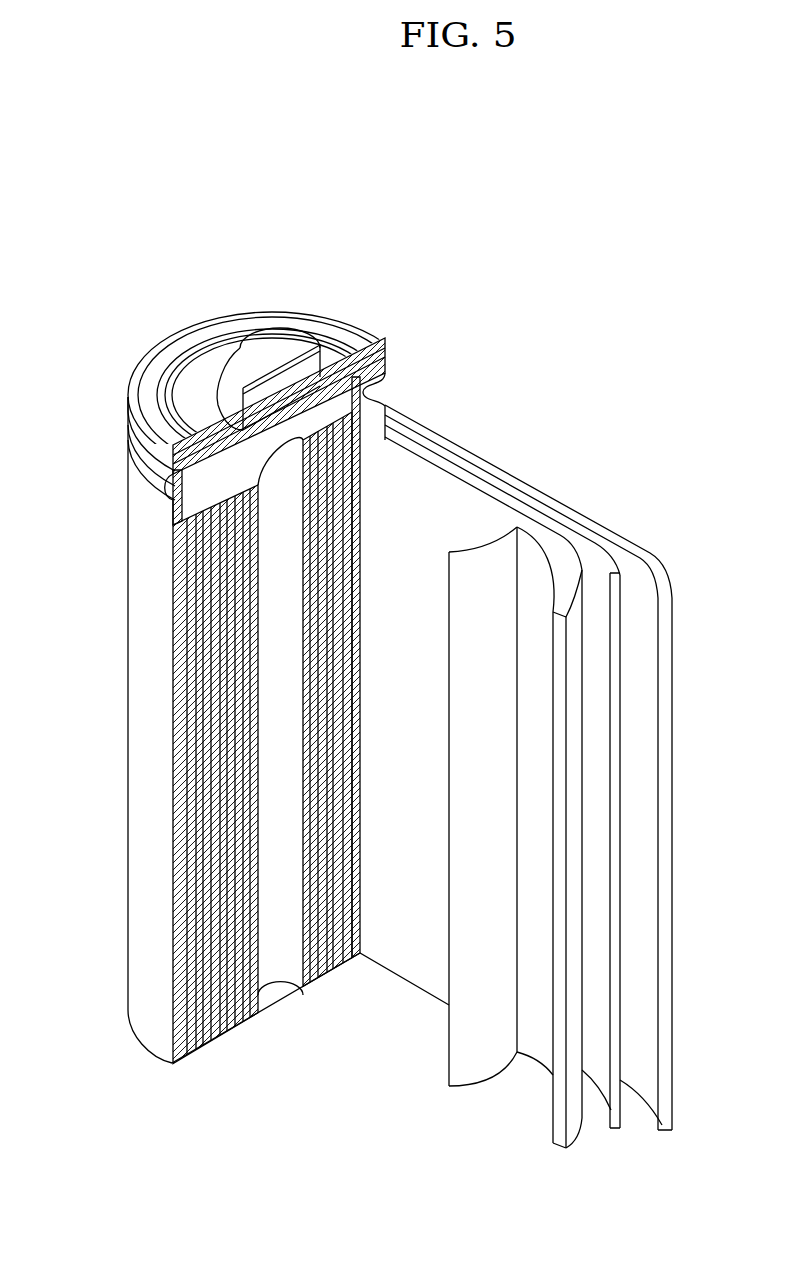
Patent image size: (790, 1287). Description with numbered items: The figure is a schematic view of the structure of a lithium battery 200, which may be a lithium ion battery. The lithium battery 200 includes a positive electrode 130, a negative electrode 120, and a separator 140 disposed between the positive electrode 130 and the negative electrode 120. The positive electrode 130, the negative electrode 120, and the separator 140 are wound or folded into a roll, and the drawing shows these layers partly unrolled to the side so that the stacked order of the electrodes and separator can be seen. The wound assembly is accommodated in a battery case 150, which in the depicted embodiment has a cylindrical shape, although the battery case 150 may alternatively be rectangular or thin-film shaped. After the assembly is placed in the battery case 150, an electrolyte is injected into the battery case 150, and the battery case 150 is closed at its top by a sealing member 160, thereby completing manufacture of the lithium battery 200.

The lithium battery 200 is at (300, 250).
The negative electrode 120 is at (653, 573).
The positive electrode 130 is at (570, 560).
The separator 140 is at (503, 505).
The battery case 150 is at (133, 733).
The sealing member 160 is at (247, 352).